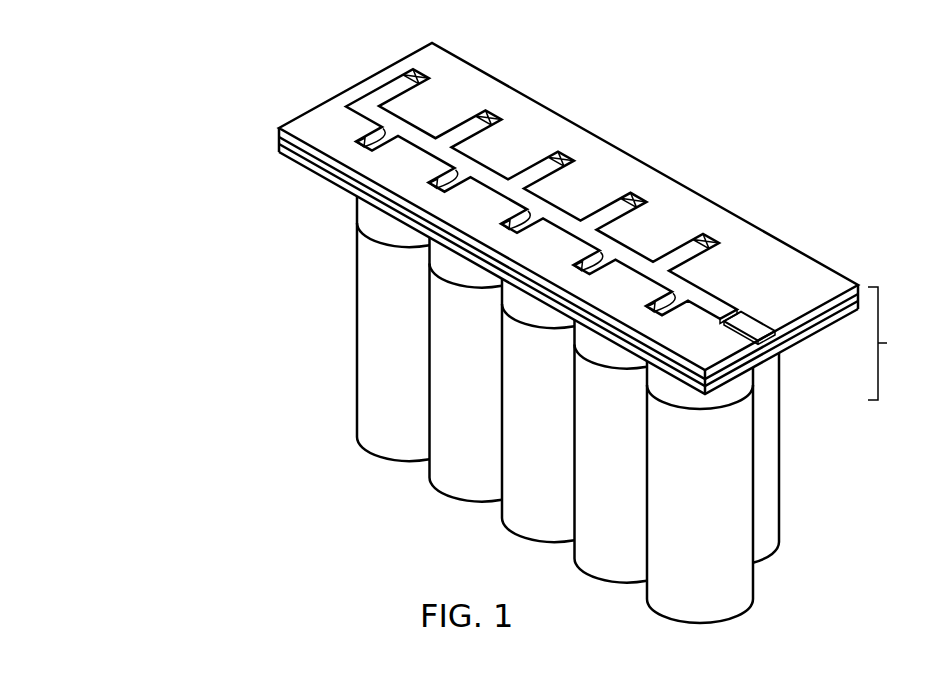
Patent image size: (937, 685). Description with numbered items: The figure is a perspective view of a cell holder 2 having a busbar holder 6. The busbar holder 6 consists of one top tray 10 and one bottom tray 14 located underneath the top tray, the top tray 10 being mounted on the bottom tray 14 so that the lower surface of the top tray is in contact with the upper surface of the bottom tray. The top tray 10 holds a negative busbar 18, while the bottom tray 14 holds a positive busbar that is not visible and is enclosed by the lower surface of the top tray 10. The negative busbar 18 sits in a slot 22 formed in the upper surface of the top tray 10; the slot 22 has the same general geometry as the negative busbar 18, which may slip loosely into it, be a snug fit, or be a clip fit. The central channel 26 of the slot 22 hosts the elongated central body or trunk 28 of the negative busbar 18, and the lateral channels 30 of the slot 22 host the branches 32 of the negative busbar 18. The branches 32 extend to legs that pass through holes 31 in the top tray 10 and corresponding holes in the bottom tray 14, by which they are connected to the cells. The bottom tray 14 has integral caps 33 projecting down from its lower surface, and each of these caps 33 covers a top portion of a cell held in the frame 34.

The cell holder 2 is at (170, 63).
The busbar holder 6 is at (887, 343).
The top tray 10 is at (300, 116).
The bottom tray 14 is at (281, 152).
The negative busbar 18 is at (708, 291).
The slot 22 is at (762, 321).
The central channel 26 is at (410, 120).
The trunk 28 is at (430, 128).
The lateral channels 30 is at (553, 151).
The holes 31 is at (710, 237).
The branches 32 is at (543, 181).
The caps 33 is at (356, 208).
The frame 34 is at (356, 285).